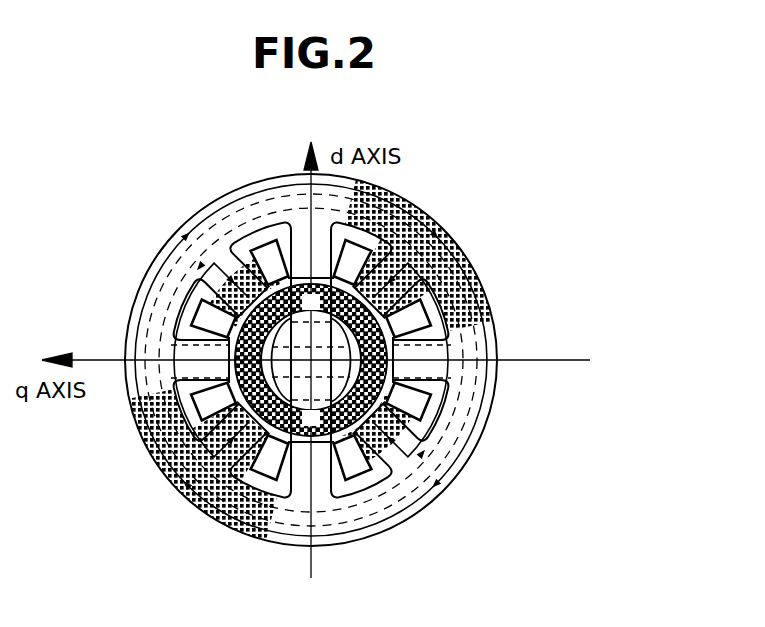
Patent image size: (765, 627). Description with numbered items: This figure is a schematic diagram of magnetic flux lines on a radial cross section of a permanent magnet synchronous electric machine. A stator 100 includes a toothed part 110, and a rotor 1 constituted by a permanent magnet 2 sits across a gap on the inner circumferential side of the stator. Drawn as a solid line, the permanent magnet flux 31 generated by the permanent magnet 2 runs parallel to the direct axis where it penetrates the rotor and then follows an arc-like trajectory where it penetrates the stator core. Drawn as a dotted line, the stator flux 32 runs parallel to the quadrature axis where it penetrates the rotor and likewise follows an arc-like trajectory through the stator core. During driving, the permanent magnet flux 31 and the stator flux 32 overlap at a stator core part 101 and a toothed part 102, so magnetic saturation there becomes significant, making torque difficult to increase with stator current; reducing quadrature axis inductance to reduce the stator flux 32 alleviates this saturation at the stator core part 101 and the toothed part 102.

The rotor 1 is at (300, 360).
The permanent magnet 2 is at (351, 447).
The permanent magnet flux 31 is at (178, 303).
The stator flux 32 is at (252, 203).
The stator 100 is at (497, 343).
The stator core part 101 is at (437, 218).
The toothed part 102 is at (240, 278).
The toothed part 110 is at (468, 292).